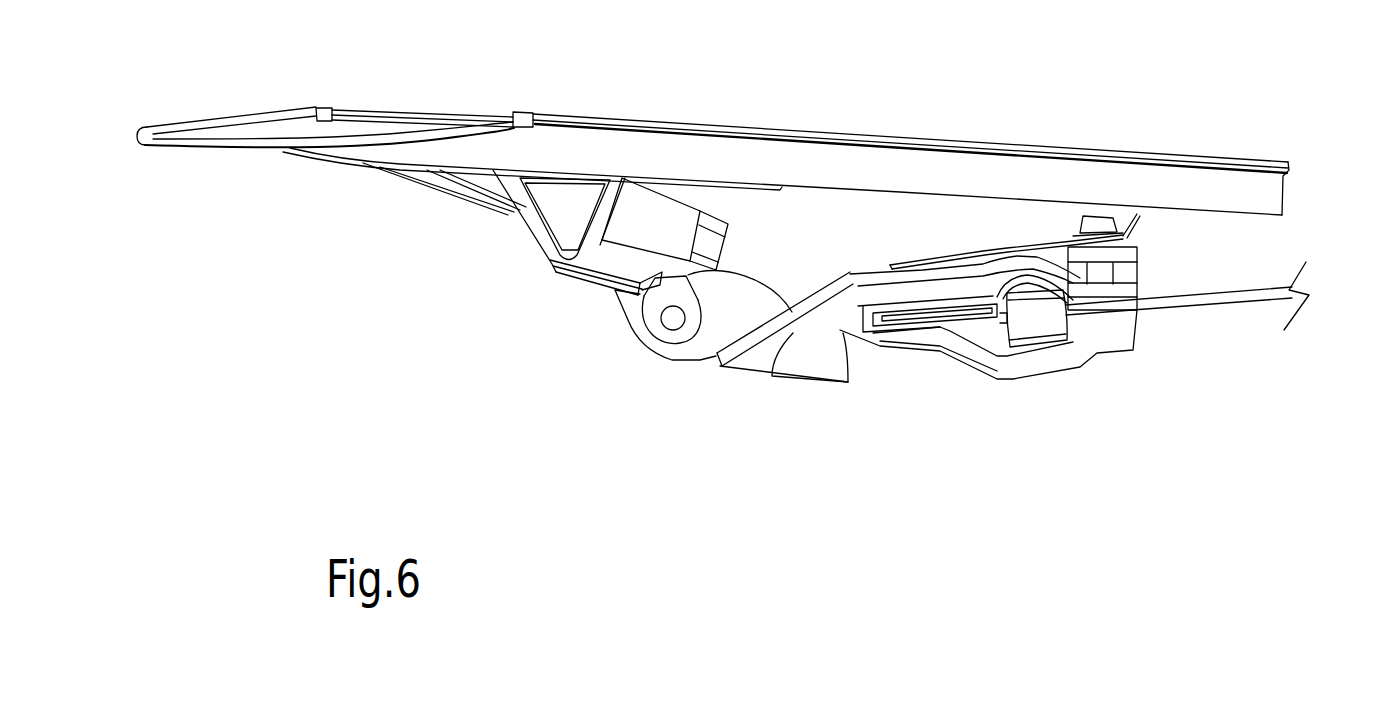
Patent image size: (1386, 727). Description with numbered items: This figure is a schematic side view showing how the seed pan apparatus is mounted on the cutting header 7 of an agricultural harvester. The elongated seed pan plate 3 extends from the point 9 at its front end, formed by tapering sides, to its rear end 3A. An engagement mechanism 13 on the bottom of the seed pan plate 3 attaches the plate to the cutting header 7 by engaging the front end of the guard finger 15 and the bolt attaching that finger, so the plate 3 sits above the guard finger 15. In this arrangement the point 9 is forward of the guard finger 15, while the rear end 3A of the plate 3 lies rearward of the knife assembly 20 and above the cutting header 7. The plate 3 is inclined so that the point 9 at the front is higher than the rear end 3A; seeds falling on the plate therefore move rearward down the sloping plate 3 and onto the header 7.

The seed pan plate 3 is at (728, 123).
The rear end of the seed pan plate 3A is at (1288, 187).
The cutting header 7 is at (1187, 323).
The point at the front end 9 is at (140, 128).
The engagement mechanism 13 is at (560, 270).
The guard finger 15 is at (797, 334).
The knife assembly 20 is at (1082, 410).